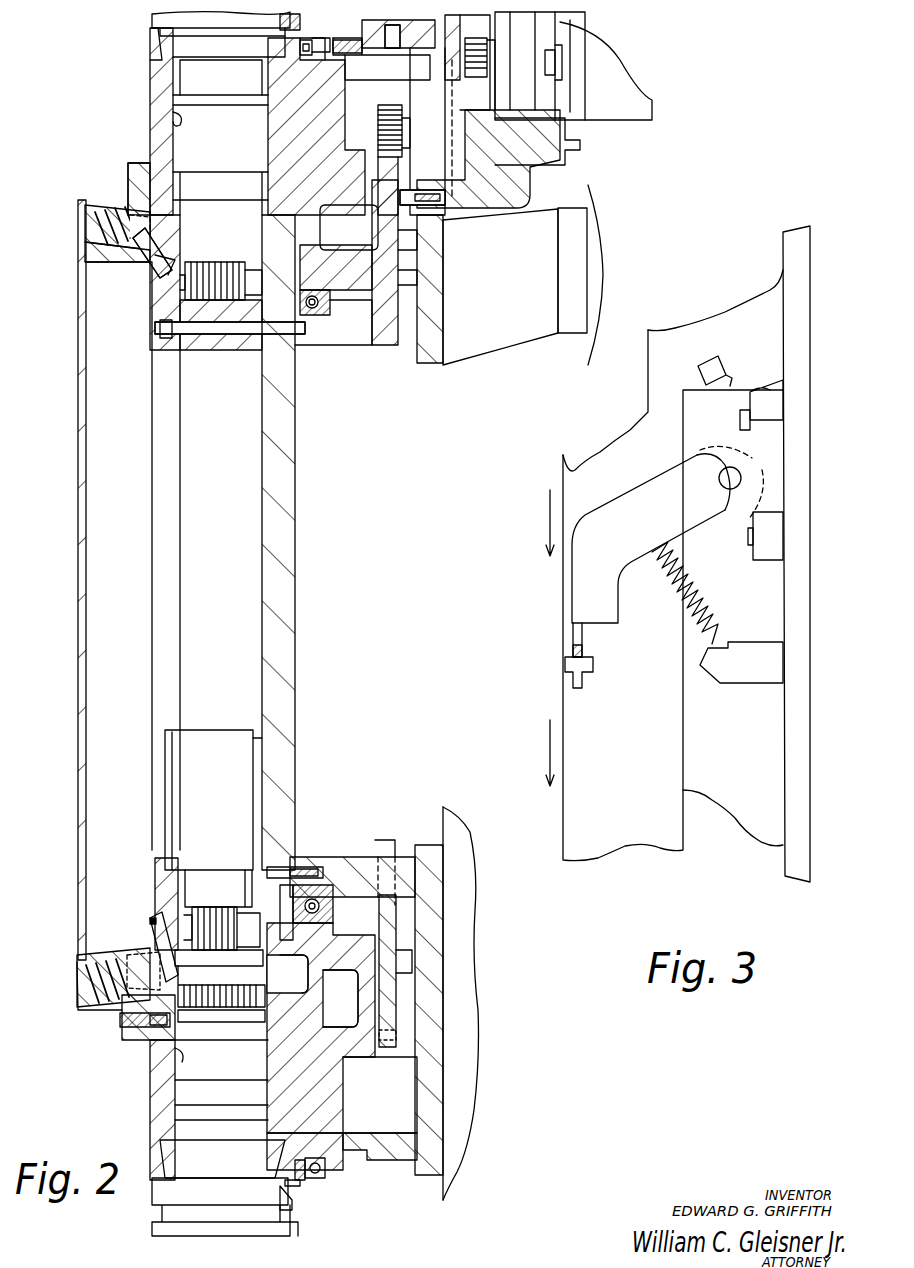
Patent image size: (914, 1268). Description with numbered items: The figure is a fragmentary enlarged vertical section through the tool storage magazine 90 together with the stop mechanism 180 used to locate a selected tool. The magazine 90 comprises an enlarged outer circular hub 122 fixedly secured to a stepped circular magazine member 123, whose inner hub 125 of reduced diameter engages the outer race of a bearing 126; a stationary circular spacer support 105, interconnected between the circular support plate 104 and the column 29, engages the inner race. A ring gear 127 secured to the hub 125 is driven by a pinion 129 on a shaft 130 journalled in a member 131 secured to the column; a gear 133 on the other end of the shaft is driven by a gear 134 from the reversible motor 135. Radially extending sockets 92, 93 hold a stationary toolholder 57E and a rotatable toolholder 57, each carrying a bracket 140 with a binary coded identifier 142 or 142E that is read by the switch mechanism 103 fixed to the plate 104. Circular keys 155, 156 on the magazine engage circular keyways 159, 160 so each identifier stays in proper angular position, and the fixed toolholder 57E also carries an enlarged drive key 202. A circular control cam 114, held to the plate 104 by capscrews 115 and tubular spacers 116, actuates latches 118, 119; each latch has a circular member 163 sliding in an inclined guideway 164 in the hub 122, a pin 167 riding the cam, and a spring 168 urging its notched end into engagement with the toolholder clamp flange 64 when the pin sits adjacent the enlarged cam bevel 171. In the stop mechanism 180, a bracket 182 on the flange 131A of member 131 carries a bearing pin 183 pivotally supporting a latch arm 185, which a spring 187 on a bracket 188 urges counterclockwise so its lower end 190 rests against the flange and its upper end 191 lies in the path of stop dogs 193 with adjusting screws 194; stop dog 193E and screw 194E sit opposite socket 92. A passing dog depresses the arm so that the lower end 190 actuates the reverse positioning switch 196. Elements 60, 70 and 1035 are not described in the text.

In FIG. 2, the column 29 is at (425, 355).
In FIG. 2, the toolholder 57 is at (247, 1138).
In FIG. 2, the stationary toolholder 57E is at (220, 136).
In FIG. 2, the gear 60 is at (325, 998).
In FIG. 2, the toolholder clamp flange 64 is at (250, 962).
In FIG. 2, the housing block 70 is at (262, 965).
In FIG. 2, the storage magazine 90 is at (110, 161).
In FIG. 2, the tool receiving socket 92 is at (173, 114).
In FIG. 2, the tool receiving socket 93 is at (175, 1052).
In FIG. 2, the binary coded switch mechanism 103 is at (196, 716).
In FIG. 2, the circular support plate 104 is at (290, 764).
In FIG. 2, the circular spacer support 105 is at (330, 866).
In FIG. 2, the control cam 114 is at (160, 376).
In FIG. 2, the capscrews 115 is at (160, 330).
In FIG. 2, the tubular spacers 116 is at (238, 340).
In FIG. 2, the latch 118 is at (141, 284).
In FIG. 2, the latch 119 is at (145, 932).
In FIG. 2, the outer circular hub 122 is at (128, 172).
In FIG. 2, the circular magazine member 123 is at (150, 147).
In FIG. 3, the circular magazine member 123 is at (600, 850).
In FIG. 2, the inner hub 125 is at (367, 333).
In FIG. 2, the bearing 126 is at (322, 318).
In FIG. 2, the ring gear 127 is at (408, 1048).
In FIG. 2, the pinion 129 is at (349, 227).
In FIG. 2, the shaft 130 is at (405, 145).
In FIG. 2, the member 131 is at (448, 80).
In FIG. 3, the member 131 is at (766, 836).
In FIG. 2, the flange 131A is at (455, 100).
In FIG. 3, the flange 131A is at (795, 250).
In FIG. 2, the gear 133 is at (510, 168).
In FIG. 2, the gear 134 is at (470, 50).
In FIG. 2, the reversible motor 135 is at (640, 116).
In FIG. 2, the bracket 140 is at (245, 920).
In FIG. 2, the binary coded identifier 142 is at (209, 894).
In FIG. 2, the binary coded identifier 142E is at (197, 320).
In FIG. 2, the circular key 155 is at (275, 55).
In FIG. 2, the circular key 156 is at (296, 1188).
In FIG. 2, the circular keyway 159 is at (285, 28).
In FIG. 2, the circular keyway 160 is at (296, 1222).
In FIG. 2, the circular member 163 is at (148, 952).
In FIG. 2, the guideway 164 is at (130, 1010).
In FIG. 2, the pin 167 is at (150, 915).
In FIG. 2, the spring 168 is at (95, 980).
In FIG. 2, the enlarged cam bevel 171 is at (152, 912).
In FIG. 2, the stop mechanism 180 is at (369, 25).
In FIG. 3, the stop mechanism 180 is at (720, 294).
In FIG. 2, the bracket 182 is at (398, 30).
In FIG. 3, the bracket 182 is at (765, 555).
In FIG. 2, the bearing pin 183 is at (402, 60).
In FIG. 3, the bearing pin 183 is at (718, 474).
In FIG. 2, the latch arm 185 is at (330, 95).
In FIG. 3, the latch arm 185 is at (645, 522).
In FIG. 3, the spring 187 is at (690, 630).
In FIG. 3, the bracket 188 is at (762, 674).
In FIG. 3, the lower end 190 is at (772, 390).
In FIG. 3, the upper end 191 is at (572, 598).
In FIG. 2, the stop dog 193 is at (306, 56).
In FIG. 3, the stop dog 193 is at (575, 668).
In FIG. 2, the stop dog 193E is at (327, 1166).
In FIG. 2, the adjusting screw 194 is at (318, 42).
In FIG. 3, the adjusting screw 194 is at (573, 642).
In FIG. 2, the adjusting screw 194E is at (320, 1180).
In FIG. 3, the reverse positioning switch 196 is at (700, 368).
In FIG. 2, the drive key 202 is at (158, 40).
In FIG. 2, the shaft end 1035 is at (160, 918).